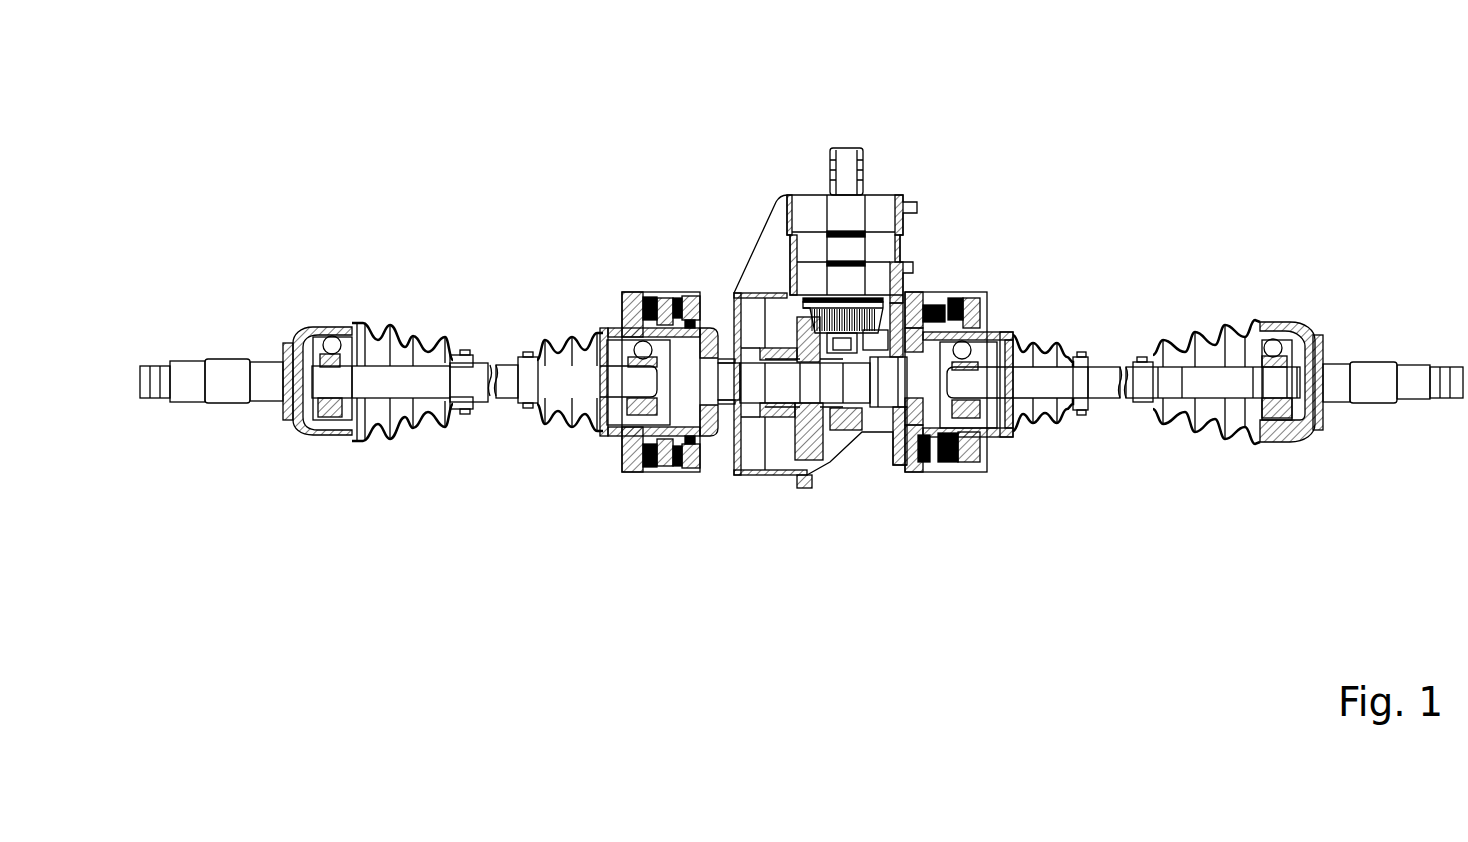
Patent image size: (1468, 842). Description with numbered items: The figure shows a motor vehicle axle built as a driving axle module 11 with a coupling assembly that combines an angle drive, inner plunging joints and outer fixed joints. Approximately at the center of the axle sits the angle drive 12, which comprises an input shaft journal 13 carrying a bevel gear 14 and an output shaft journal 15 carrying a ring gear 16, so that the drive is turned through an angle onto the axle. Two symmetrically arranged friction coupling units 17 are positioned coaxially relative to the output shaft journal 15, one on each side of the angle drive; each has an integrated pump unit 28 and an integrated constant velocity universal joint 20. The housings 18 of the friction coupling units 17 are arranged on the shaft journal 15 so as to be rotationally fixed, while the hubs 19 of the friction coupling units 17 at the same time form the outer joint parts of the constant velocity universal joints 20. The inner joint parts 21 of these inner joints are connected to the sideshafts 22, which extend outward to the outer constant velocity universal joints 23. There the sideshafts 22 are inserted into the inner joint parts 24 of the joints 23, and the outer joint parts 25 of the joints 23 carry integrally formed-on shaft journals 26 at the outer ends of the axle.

The driving axle module 11 is at (990, 148).
The angle drive 12 is at (768, 205).
The input shaft journal 13 is at (853, 213).
The bevel gear 14 is at (828, 330).
The output shaft journal 15 is at (778, 395).
The ring gear 16 is at (810, 405).
The friction coupling units 17 is at (960, 288).
The housings 18 is at (910, 468).
The hubs 19 is at (952, 470).
The constant velocity universal joints 20 is at (995, 312).
The inner joint parts 21 is at (995, 437).
The sideshafts 22 is at (1093, 402).
The outer constant velocity universal joints 23 is at (1288, 313).
The inner joint parts 24 is at (1293, 422).
The outer joint parts 25 is at (1298, 420).
The shaft journals 26 is at (1370, 395).
The pump units 28 is at (933, 290).